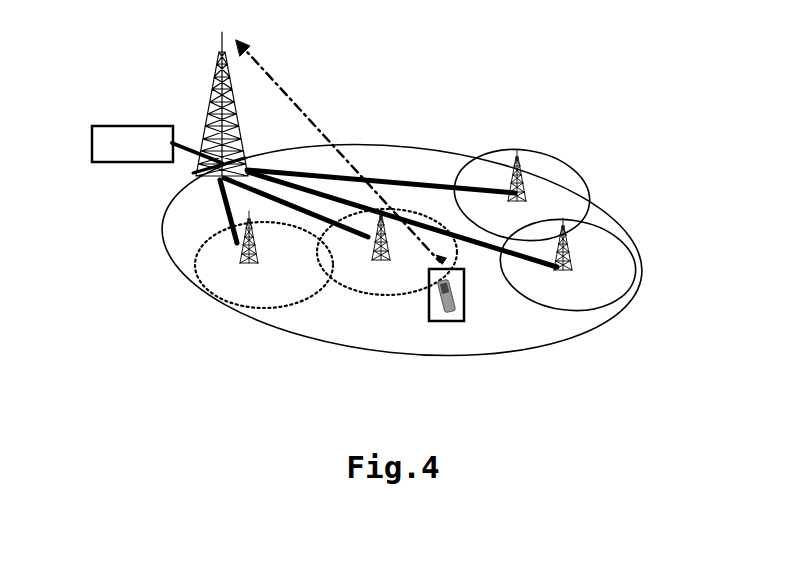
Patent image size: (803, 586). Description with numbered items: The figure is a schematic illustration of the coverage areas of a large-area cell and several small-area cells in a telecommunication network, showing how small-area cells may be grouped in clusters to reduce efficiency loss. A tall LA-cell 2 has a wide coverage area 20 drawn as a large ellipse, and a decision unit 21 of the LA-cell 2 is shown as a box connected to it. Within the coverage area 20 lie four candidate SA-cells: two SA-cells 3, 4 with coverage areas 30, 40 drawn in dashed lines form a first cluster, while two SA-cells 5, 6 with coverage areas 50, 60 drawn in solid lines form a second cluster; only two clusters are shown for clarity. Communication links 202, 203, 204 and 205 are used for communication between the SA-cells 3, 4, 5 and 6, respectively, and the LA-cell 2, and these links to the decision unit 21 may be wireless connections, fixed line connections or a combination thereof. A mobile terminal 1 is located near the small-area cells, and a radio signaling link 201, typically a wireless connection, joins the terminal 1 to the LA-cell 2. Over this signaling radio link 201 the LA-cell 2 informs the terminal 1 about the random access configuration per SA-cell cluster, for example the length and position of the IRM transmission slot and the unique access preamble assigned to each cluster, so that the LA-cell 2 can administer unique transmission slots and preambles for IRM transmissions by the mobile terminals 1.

The mobile terminal 1 is at (448, 315).
The LA-cell 2 is at (219, 62).
The SA-cell 3 is at (247, 258).
The SA-cell 4 is at (382, 253).
The SA-cell 5 is at (563, 268).
The SA-cell 6 is at (520, 185).
The coverage area 20 is at (518, 330).
The decision unit 21 is at (120, 128).
The coverage area 30 is at (250, 290).
The coverage area 40 is at (388, 287).
The coverage area 50 is at (617, 285).
The coverage area 60 is at (552, 170).
The communication link 201 is at (341, 152).
The communication link 202 is at (210, 211).
The communication link 203 is at (296, 218).
The communication link 204 is at (402, 219).
The communication link 205 is at (381, 179).